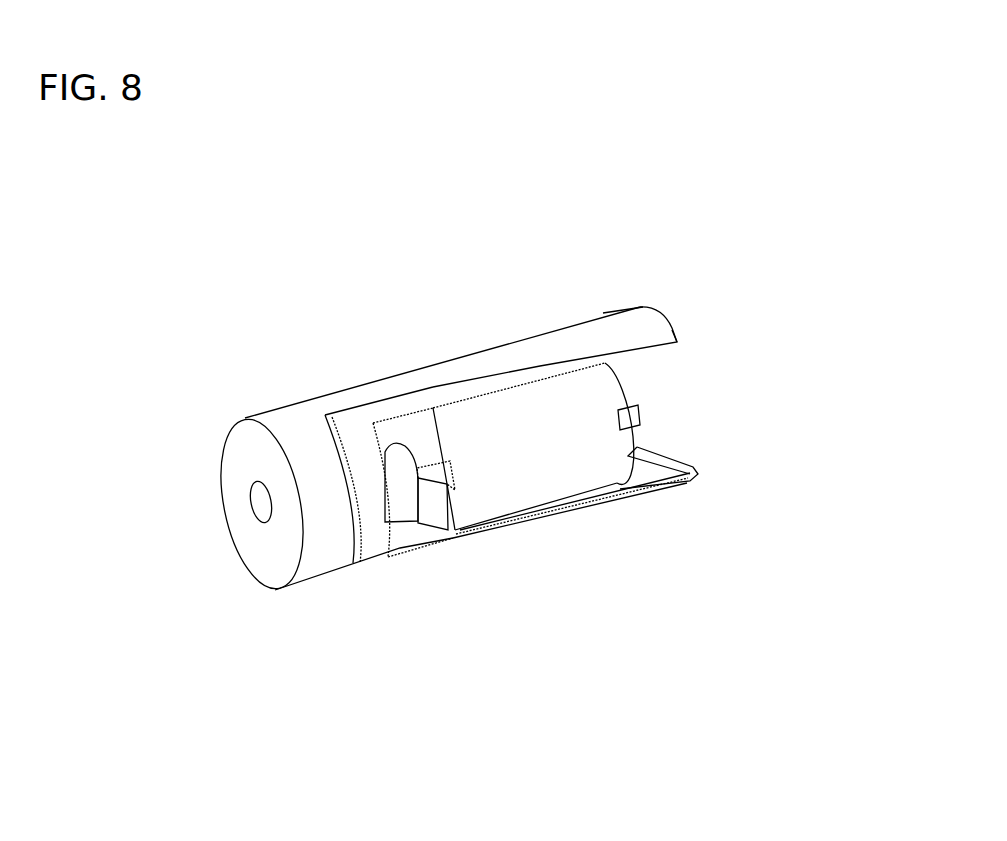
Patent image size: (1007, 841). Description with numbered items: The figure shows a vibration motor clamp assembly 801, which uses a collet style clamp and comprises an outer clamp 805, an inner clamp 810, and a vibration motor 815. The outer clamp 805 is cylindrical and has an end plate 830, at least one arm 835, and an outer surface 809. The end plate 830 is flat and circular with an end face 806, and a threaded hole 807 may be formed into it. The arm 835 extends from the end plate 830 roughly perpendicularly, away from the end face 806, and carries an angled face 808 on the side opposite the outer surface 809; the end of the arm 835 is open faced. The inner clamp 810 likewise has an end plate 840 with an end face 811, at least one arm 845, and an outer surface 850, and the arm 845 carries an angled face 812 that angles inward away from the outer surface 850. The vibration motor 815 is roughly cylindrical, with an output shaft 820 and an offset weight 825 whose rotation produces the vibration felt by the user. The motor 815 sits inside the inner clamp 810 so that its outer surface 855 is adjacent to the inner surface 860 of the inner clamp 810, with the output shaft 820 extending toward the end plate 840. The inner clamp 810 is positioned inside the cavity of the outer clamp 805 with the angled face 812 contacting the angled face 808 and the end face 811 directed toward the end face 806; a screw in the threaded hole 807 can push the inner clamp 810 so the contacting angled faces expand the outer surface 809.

The vibration motor clamp assembly 801 is at (170, 676).
The outer clamp 805 is at (332, 403).
The end face 806 is at (228, 442).
The threaded hole 807 is at (257, 515).
The angled face 808 is at (660, 347).
The outer surface 809 is at (637, 332).
The inner clamp 810 is at (415, 528).
The end face 811 is at (363, 543).
The angled face 812 is at (527, 367).
The vibration motor 815 is at (590, 463).
The output shaft 820 is at (412, 467).
The offset weight 825 is at (393, 473).
The end plate 830 is at (258, 428).
The arm 835 is at (477, 358).
The end plate 840 is at (373, 517).
The arm 845 is at (513, 528).
The outer surface 850 is at (389, 417).
The outer surface 855 is at (538, 443).
The inner surface 860 is at (481, 517).